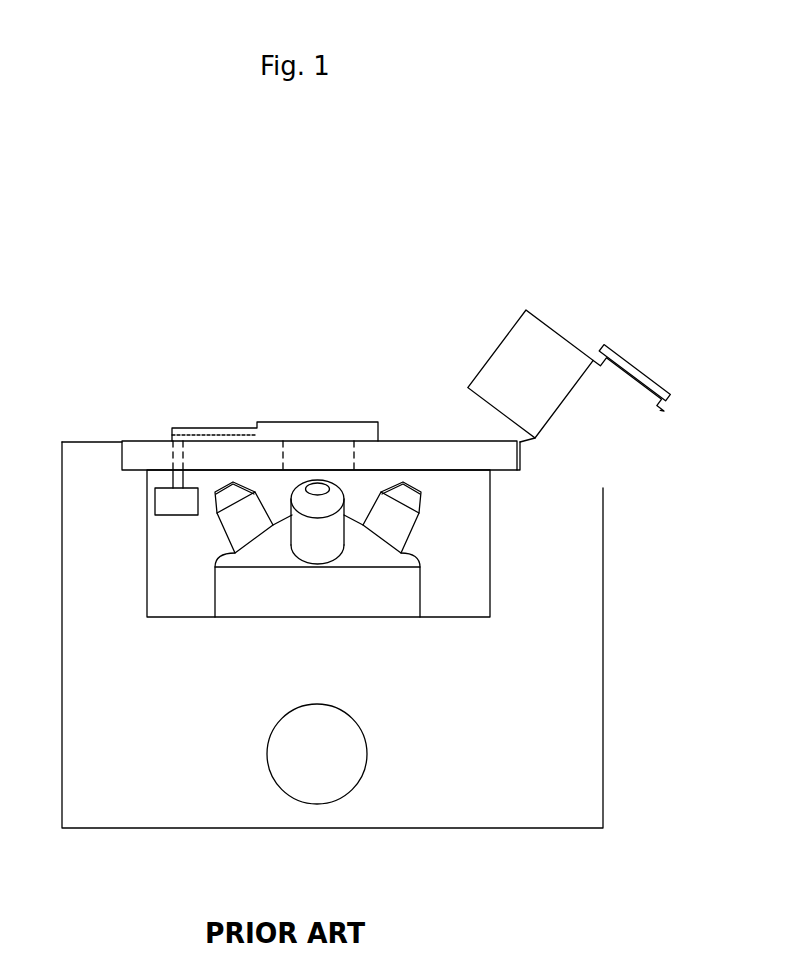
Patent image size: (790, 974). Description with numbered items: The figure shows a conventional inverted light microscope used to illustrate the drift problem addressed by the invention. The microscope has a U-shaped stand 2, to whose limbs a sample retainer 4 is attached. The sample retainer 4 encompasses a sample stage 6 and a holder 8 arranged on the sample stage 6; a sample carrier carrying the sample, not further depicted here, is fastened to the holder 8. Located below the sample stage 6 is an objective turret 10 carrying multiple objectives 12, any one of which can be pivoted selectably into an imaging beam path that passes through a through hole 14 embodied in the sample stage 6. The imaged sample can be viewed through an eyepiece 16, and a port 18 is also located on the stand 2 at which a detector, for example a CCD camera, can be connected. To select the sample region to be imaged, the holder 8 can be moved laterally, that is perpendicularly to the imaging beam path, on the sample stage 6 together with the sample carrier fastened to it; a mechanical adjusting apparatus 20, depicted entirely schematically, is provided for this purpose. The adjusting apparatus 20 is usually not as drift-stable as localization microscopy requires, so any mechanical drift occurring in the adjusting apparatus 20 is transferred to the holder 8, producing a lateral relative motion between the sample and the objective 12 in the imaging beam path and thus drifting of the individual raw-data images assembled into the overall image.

The stand 2 is at (93, 820).
The sample retainer 4 is at (433, 345).
The sample stage 6 is at (458, 448).
The holder 8 is at (380, 430).
The objective turret 10 is at (420, 597).
The objective 12 is at (410, 528).
The through hole 14 is at (340, 462).
The eyepiece 16 is at (638, 427).
The port 18 is at (357, 770).
The mechanical adjusting apparatus 20 is at (176, 515).